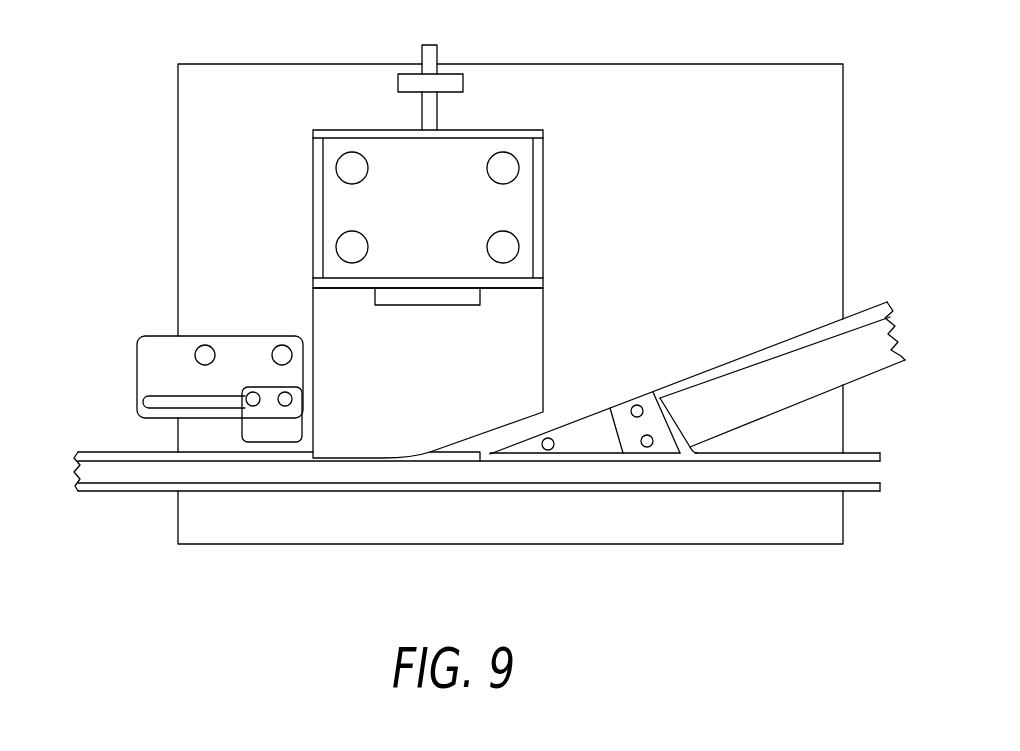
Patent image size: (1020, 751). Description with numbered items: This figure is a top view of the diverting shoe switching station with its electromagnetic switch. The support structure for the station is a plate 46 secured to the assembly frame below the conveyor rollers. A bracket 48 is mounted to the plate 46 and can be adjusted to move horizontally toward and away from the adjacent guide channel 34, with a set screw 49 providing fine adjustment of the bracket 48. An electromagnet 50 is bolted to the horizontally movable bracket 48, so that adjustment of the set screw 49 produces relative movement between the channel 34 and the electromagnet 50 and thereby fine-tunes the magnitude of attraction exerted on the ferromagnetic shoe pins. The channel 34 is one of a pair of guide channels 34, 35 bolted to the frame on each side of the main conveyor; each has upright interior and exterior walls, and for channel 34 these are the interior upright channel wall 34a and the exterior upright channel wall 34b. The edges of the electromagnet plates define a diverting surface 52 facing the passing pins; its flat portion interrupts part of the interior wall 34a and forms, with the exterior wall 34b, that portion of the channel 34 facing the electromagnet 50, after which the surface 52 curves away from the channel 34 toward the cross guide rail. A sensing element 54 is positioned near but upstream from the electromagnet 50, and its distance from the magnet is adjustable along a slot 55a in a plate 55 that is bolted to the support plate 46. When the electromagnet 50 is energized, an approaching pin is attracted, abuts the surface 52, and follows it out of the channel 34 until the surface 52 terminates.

The guide channel 34 is at (501, 497).
The interior upright channel wall 34a is at (867, 453).
The exterior upright channel wall 34b is at (479, 538).
The guide channel 35 is at (877, 378).
The plate 46 is at (758, 241).
The bracket 48 is at (543, 152).
The set screw 49 is at (447, 73).
The electromagnet 50 is at (545, 358).
The diverting surface 52 is at (365, 461).
The sensing element 54 is at (164, 345).
The plate 55 is at (227, 335).
The slot 55a is at (145, 403).